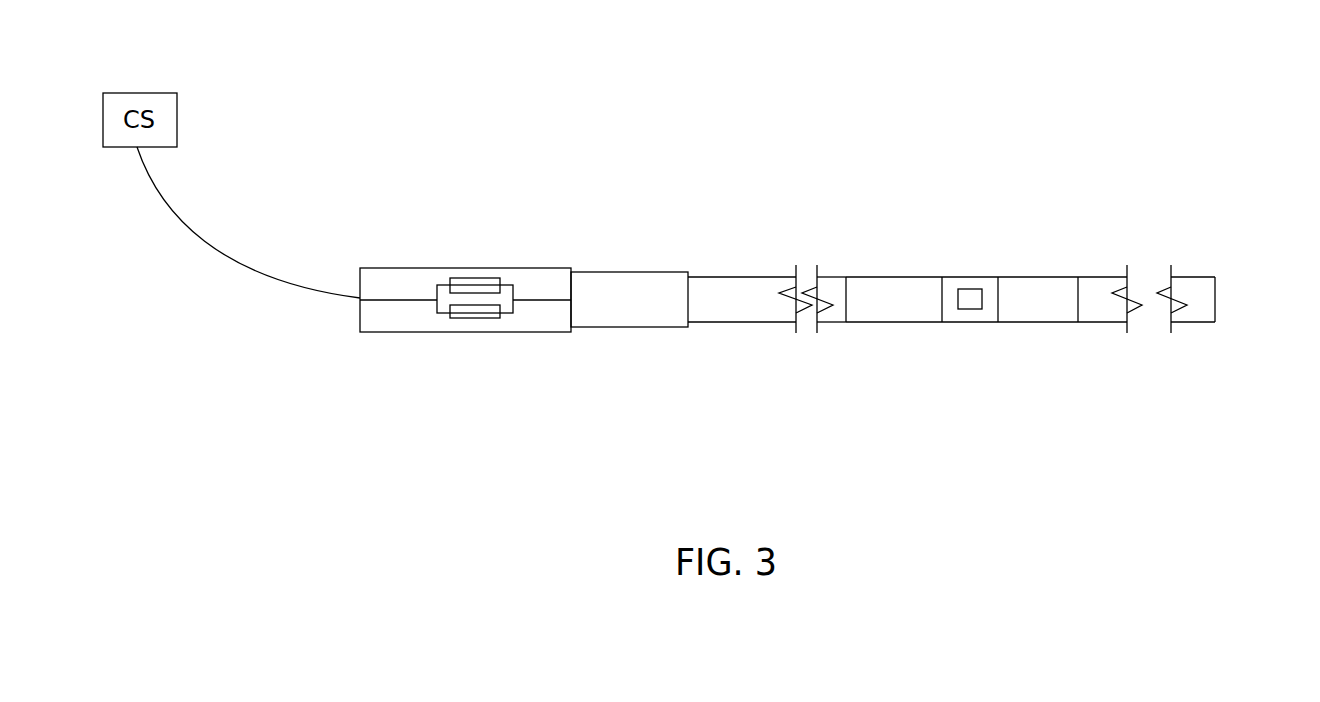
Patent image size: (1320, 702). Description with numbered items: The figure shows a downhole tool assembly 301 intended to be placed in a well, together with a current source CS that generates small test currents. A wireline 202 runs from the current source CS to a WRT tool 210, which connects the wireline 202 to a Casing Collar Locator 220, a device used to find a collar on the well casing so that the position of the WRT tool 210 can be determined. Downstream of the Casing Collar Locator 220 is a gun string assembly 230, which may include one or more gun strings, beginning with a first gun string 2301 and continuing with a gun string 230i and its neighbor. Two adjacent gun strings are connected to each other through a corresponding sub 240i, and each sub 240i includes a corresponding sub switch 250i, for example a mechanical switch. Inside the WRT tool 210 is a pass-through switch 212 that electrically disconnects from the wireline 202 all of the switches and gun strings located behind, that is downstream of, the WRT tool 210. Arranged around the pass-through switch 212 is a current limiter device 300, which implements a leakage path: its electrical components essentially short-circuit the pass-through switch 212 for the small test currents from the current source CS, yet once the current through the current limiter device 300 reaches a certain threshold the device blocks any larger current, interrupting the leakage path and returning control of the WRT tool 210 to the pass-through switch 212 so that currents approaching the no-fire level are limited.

The wireline 202 is at (225, 263).
The WRT tool 210 is at (457, 261).
The current limiter device 300 is at (487, 286).
The pass-through switch 212 is at (475, 312).
The Casing Collar Locator 220 is at (611, 261).
The gun string assembly 230 is at (951, 314).
The first gun string 2301 is at (740, 262).
The gun string 230i is at (882, 288).
The sub 240i is at (970, 288).
The sub switch 250i is at (969, 310).
The downhole tool assembly 301 is at (1192, 74).